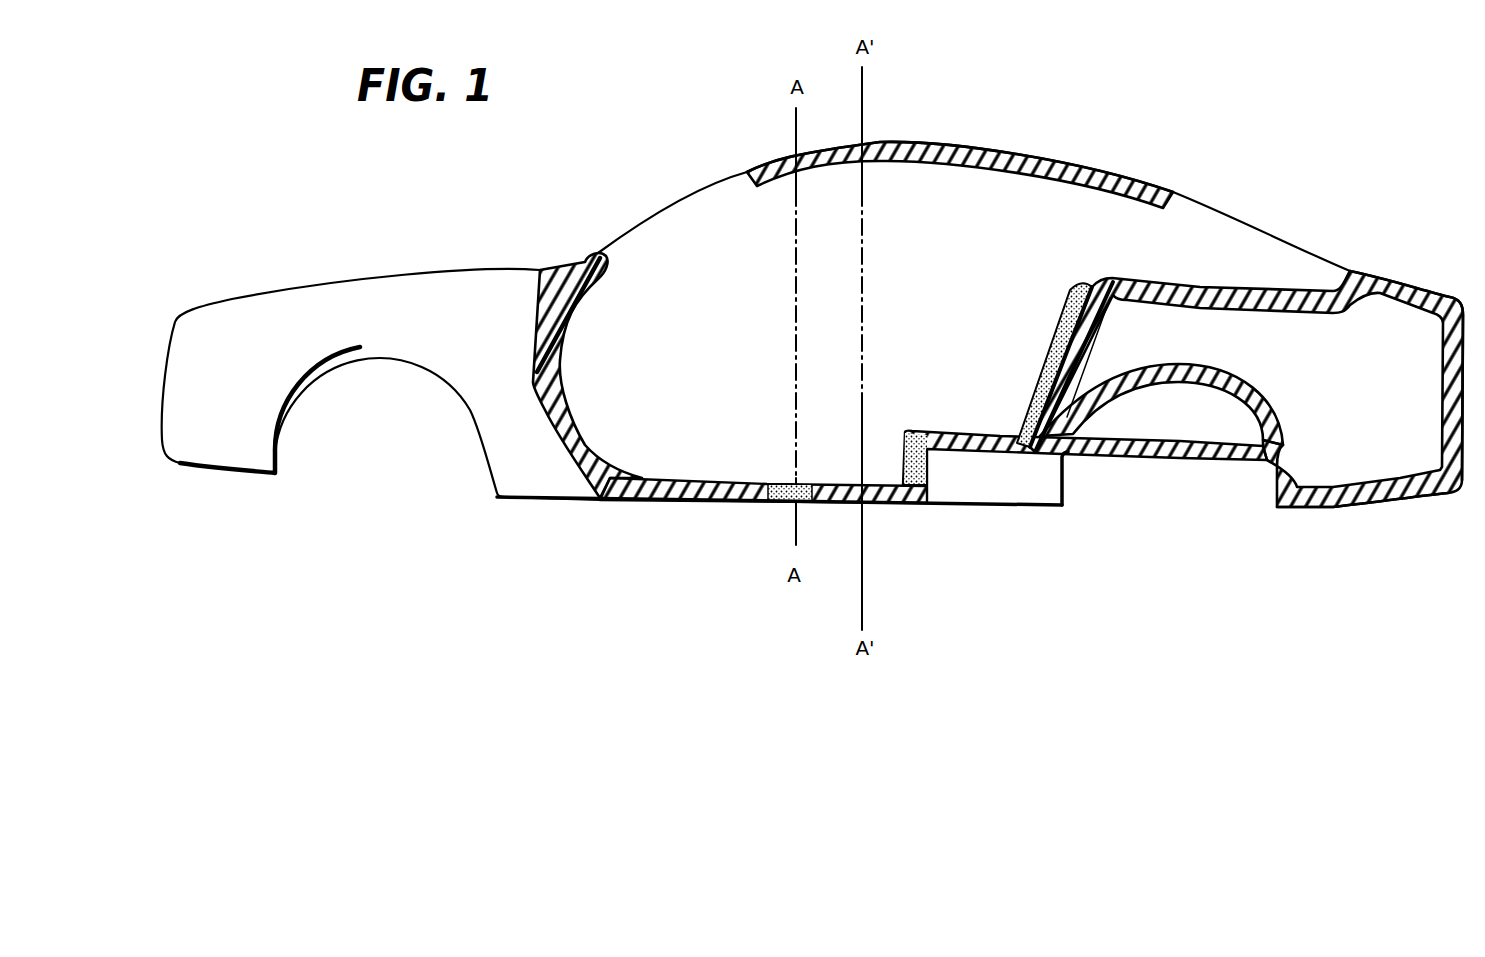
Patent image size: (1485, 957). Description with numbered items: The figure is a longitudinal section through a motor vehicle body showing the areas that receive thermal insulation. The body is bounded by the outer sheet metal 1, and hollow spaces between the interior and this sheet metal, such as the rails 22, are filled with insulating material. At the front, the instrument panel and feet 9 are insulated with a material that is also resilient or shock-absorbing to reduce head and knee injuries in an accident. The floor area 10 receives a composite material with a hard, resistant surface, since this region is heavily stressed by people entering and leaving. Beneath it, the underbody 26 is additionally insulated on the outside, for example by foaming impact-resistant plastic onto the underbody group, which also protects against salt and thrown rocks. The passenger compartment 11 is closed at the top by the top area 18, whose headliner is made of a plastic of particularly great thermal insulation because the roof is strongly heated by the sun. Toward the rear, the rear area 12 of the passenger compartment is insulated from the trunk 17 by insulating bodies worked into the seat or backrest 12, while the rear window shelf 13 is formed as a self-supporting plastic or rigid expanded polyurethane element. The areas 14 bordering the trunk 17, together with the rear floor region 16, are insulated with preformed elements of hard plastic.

The outer sheet metal 1 is at (903, 142).
The top area 18 is at (995, 147).
The passenger compartment 11 is at (725, 339).
The feet 9 is at (557, 437).
The floor area 10 is at (717, 503).
The rails 22 is at (777, 505).
The underbody 26 is at (875, 505).
The rear area 12 is at (1037, 452).
The rear window shelf 13 is at (1190, 283).
The areas bordering the trunk 14 is at (1403, 278).
The rear floor bottom 16 is at (1327, 507).
The trunk 17 is at (1323, 442).